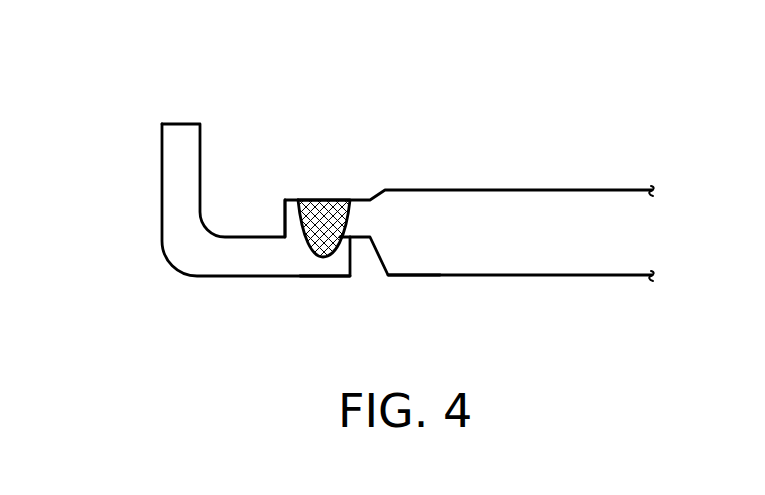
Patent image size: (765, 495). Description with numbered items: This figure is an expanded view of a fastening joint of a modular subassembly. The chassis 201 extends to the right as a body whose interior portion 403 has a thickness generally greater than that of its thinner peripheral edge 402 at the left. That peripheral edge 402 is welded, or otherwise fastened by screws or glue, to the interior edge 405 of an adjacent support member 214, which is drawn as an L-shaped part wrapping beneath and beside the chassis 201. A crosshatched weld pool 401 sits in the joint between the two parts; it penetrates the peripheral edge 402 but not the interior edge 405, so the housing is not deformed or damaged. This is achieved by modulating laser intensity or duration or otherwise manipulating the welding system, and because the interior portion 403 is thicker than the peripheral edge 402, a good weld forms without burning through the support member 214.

The support member 214 is at (172, 123).
The chassis 201 is at (512, 238).
The weld pool 401 is at (325, 200).
The peripheral edge 402 is at (295, 182).
The interior portion 403 is at (422, 300).
The interior edge 405 is at (291, 297).